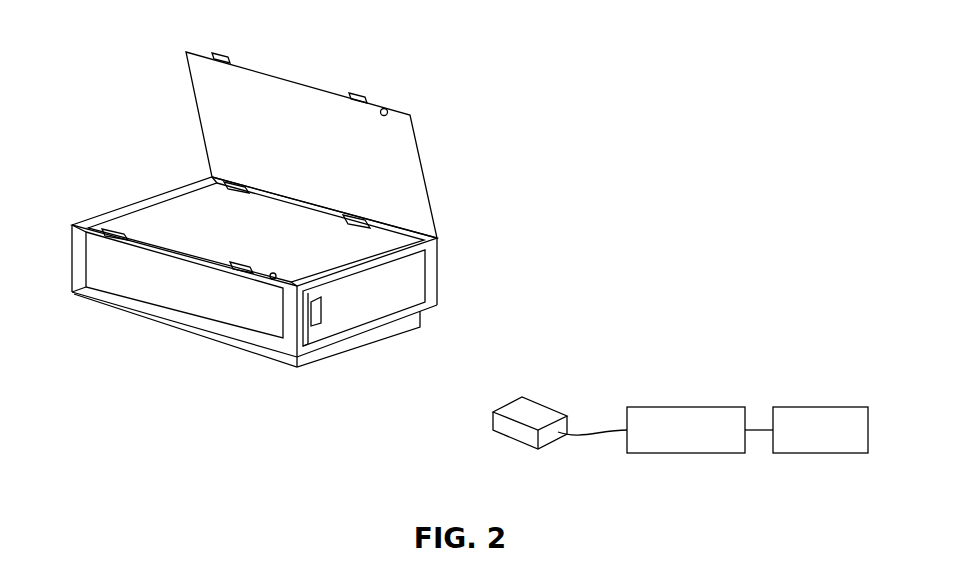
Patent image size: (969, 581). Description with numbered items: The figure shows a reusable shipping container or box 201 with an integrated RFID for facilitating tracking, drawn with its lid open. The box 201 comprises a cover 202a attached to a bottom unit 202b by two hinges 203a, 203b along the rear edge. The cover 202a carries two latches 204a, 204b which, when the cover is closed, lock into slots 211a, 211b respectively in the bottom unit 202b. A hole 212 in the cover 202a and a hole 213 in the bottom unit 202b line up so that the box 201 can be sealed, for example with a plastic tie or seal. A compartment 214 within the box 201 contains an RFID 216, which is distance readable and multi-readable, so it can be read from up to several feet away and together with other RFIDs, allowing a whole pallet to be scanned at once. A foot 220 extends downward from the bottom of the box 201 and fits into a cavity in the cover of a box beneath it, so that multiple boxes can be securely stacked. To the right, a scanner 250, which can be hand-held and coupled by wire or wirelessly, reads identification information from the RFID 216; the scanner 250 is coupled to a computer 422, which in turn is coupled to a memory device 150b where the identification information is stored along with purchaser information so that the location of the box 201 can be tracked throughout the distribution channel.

The box 201 is at (291, 201).
The cover 202a is at (347, 124).
The bottom unit 202b is at (291, 285).
The hinge 203a is at (222, 190).
The hinge 203b is at (345, 222).
The latch 204a is at (357, 93).
The latch 204b is at (223, 52).
The slot 211a is at (240, 274).
The slot 211b is at (115, 240).
The hole 212 is at (386, 108).
The hole 213 is at (272, 280).
The compartment 214 is at (317, 332).
The RFID 216 is at (318, 315).
The foot 220 is at (410, 330).
The scanner 250 is at (533, 413).
The computer 422 is at (656, 407).
The memory device 150b is at (815, 407).